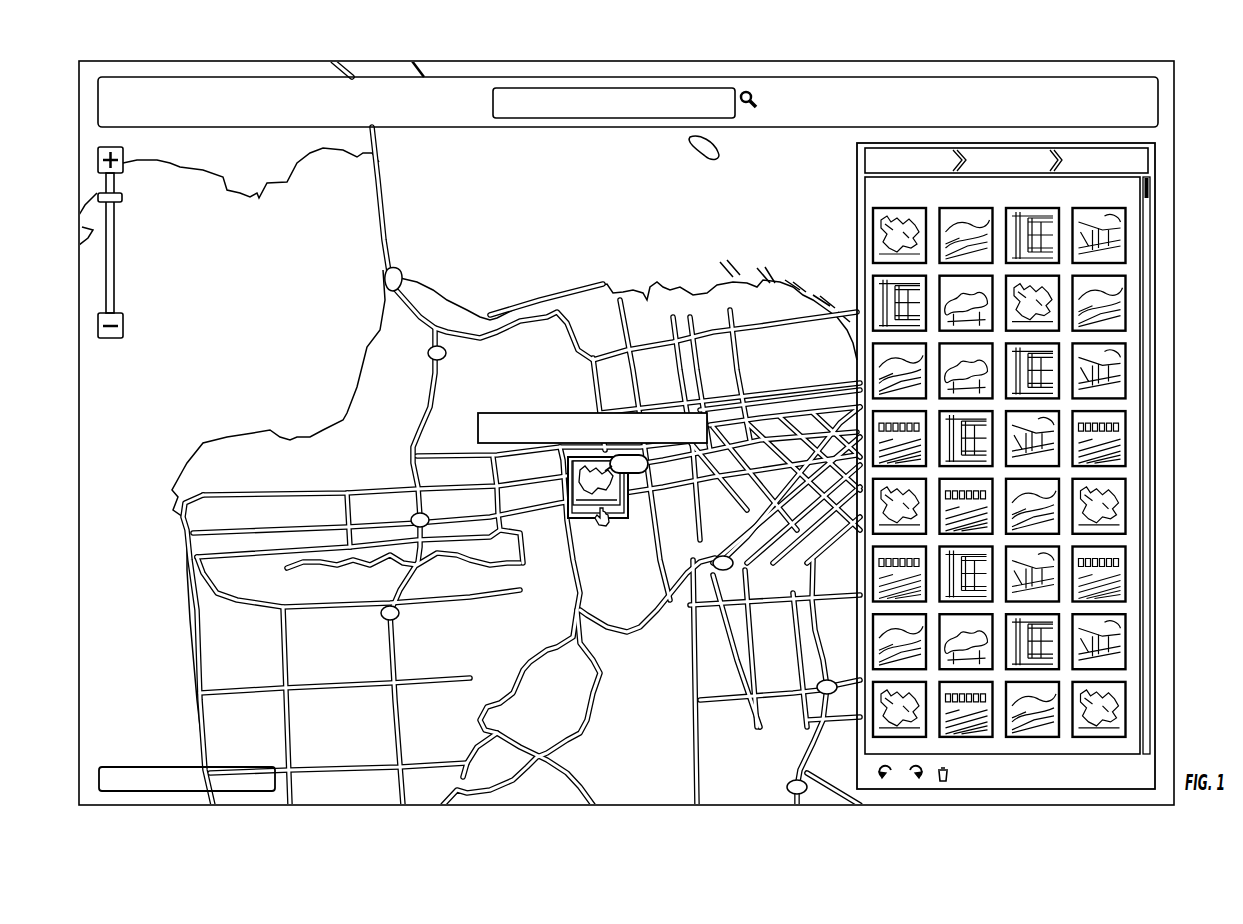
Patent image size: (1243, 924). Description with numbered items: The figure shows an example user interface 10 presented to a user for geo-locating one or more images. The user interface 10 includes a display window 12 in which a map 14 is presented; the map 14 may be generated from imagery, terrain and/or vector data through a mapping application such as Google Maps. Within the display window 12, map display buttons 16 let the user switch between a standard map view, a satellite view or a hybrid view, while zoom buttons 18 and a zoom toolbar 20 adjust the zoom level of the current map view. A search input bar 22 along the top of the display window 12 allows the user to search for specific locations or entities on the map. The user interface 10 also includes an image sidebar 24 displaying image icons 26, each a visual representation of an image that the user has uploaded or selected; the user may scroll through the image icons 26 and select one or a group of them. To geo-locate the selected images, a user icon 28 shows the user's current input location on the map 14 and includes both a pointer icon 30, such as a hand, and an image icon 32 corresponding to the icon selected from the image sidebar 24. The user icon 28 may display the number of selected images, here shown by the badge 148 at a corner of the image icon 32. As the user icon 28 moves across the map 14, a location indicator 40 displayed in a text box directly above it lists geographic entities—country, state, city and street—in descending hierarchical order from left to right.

The user interface 10 is at (1206, 101).
The display window 12 is at (491, 47).
The map 14 is at (443, 192).
The map display buttons 16 is at (148, 767).
The zoom buttons 18 is at (124, 157).
The zoom toolbar 20 is at (115, 250).
The search input bar 22 is at (558, 128).
The image sidebar 24 is at (1157, 193).
The image icon 26 is at (1127, 303).
The user icon 28 is at (561, 517).
The pointer icon 30 is at (604, 525).
The image icon 32 is at (572, 472).
The location indicator 40 is at (557, 413).
The photo count badge 148 is at (626, 464).